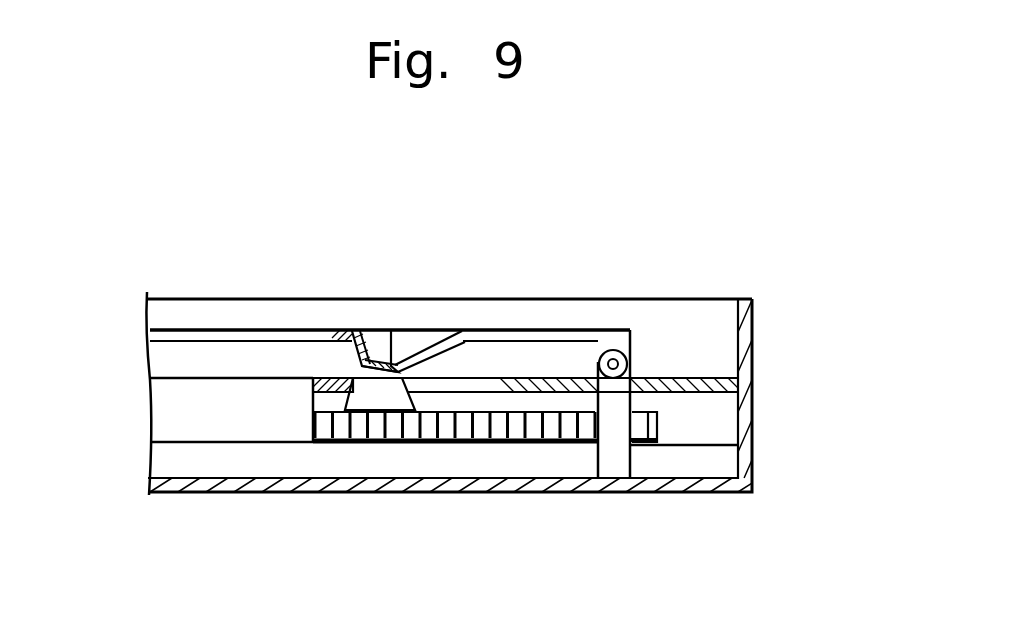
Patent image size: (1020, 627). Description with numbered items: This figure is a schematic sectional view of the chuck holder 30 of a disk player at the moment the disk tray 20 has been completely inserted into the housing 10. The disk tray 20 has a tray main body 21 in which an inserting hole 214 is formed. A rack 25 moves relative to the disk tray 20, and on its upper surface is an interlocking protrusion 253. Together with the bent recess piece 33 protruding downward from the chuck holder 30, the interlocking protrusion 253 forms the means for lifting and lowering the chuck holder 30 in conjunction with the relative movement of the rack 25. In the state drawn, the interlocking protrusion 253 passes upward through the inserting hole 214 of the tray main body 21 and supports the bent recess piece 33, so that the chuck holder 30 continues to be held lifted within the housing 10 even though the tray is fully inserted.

The housing 10 is at (754, 341).
The disk tray 20 is at (147, 403).
The tray main body 21 is at (171, 390).
The rack 25 is at (382, 443).
The chuck holder 30 is at (636, 347).
The bent recess piece 33 is at (391, 331).
The inserting hole 214 is at (463, 387).
The interlocking protrusion 253 is at (425, 352).